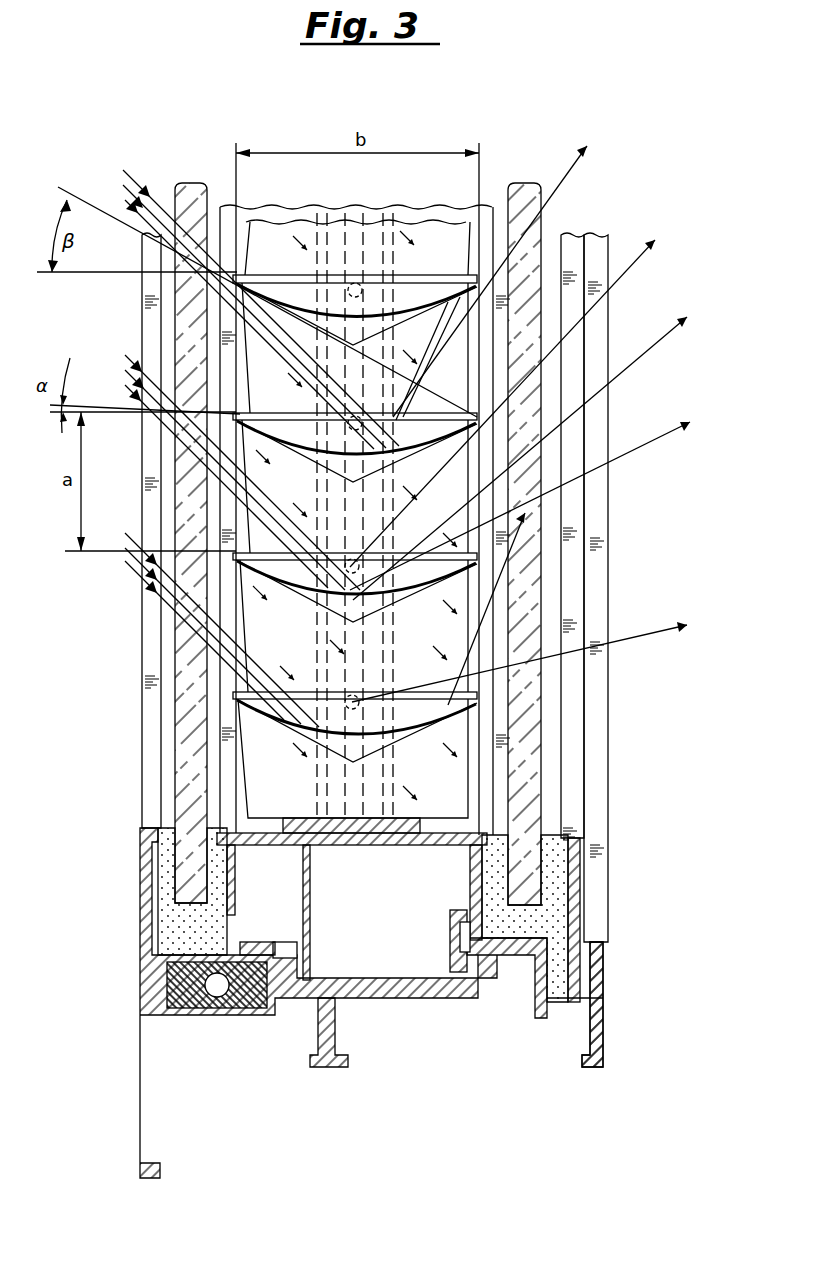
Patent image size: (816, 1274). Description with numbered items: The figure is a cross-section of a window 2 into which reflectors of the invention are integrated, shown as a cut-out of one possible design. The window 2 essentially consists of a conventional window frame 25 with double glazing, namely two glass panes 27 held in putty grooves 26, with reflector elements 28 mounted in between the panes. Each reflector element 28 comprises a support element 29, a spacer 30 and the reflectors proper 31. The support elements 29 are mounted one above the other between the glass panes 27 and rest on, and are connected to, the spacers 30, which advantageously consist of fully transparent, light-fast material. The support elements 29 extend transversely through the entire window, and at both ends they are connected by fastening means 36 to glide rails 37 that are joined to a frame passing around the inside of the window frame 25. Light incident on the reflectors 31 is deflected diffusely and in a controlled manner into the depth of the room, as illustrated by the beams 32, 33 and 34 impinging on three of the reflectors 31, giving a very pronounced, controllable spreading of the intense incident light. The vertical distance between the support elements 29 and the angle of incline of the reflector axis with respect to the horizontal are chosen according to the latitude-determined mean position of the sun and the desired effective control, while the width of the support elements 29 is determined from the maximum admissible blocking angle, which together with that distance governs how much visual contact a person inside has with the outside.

The window / glazing unit 2 is at (614, 184).
The window frame 25 is at (240, 832).
The putty grooves 26 is at (198, 862).
The glass panes 27 is at (176, 668).
The reflector elements 28 is at (287, 184).
The support element 29 is at (302, 450).
The spacer 30 is at (462, 381).
The reflectors 31 is at (286, 290).
The beams 32 is at (123, 205).
The beams 33 is at (123, 350).
The beams 34 is at (123, 518).
The fastening means 36 is at (364, 290).
The glide rails 37 is at (412, 818).